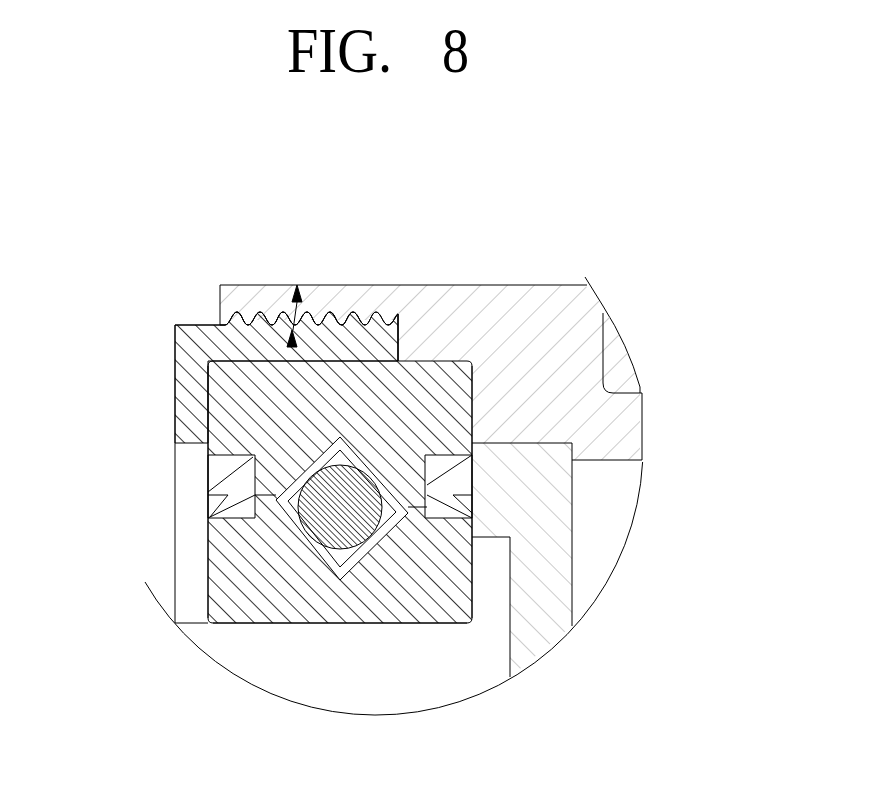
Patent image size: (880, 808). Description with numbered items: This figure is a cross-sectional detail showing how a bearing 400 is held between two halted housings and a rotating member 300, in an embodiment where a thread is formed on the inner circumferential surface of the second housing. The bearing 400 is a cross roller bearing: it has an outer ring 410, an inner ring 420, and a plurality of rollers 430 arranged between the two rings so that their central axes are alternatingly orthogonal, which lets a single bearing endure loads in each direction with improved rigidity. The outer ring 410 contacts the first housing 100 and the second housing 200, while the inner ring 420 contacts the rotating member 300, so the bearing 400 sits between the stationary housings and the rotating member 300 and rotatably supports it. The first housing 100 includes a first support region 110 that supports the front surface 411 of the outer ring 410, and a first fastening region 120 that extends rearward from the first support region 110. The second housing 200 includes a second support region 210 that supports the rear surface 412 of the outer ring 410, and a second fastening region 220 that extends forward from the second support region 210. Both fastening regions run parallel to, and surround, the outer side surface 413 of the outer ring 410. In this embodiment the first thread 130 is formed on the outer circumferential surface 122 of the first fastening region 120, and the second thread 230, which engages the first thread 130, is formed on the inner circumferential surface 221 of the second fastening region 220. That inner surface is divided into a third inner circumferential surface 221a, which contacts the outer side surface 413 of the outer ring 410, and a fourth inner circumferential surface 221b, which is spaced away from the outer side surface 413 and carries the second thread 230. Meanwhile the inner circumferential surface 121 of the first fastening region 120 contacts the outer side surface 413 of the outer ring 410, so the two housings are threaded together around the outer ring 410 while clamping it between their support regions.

The first housing 100 is at (102, 380).
The first support region 110 is at (193, 383).
The first fastening region 120 is at (193, 347).
The inner circumferential surface 121 is at (262, 322).
The outer circumferential surface 122 is at (222, 330).
The first thread 130 is at (298, 343).
The second housing 200 is at (537, 208).
The second support region 210 is at (537, 380).
The second fastening region 220 is at (443, 340).
The inner circumferential surface 221 is at (416, 212).
The third inner circumferential surface 221a is at (414, 352).
The fourth inner circumferential surface 221b is at (348, 312).
The second thread 230 is at (296, 284).
The rotating member 300 is at (511, 671).
The bearing 400 is at (424, 492).
The outer ring 410 is at (482, 441).
The front surface 411 is at (210, 410).
The rear surface 412 is at (472, 413).
The outer side surface 413 is at (207, 475).
The inner ring 420 is at (443, 568).
The rollers 430 is at (472, 522).